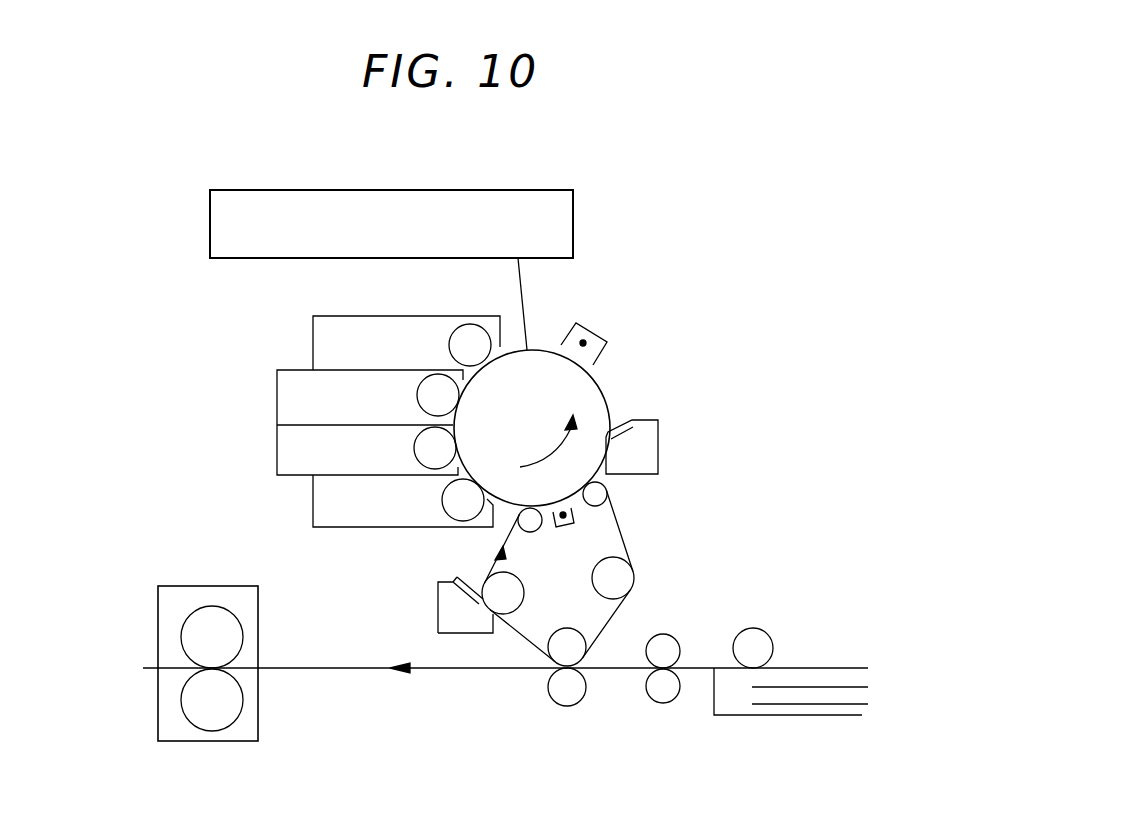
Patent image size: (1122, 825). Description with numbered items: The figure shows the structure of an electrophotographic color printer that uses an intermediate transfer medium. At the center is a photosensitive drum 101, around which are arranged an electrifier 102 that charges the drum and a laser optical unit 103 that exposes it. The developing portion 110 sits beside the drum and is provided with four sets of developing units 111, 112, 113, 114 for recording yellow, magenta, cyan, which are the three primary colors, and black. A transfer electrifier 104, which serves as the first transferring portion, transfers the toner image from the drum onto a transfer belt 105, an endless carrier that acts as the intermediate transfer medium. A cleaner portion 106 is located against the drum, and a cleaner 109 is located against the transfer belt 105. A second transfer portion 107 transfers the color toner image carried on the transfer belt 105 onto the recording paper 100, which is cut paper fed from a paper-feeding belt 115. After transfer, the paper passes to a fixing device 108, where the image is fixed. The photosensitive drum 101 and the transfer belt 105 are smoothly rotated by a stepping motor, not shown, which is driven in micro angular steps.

The recording paper 100 is at (790, 685).
The photosensitive drum 101 is at (583, 390).
The electrifier 102 is at (583, 337).
The laser optical unit 103 is at (560, 231).
The transfer electrifier 104 is at (573, 500).
The transfer belt 105 is at (495, 555).
The cleaner portion 106 is at (640, 448).
The second transfer portion 107 is at (557, 667).
The fixing device 108 is at (238, 633).
The cleaner 109 is at (457, 603).
The developing portion 110 is at (301, 420).
The developing unit 111 is at (327, 340).
The developing unit 112 is at (282, 395).
The developing unit 113 is at (277, 450).
The developing unit 114 is at (317, 502).
The paper-feeding belt 115 is at (422, 670).